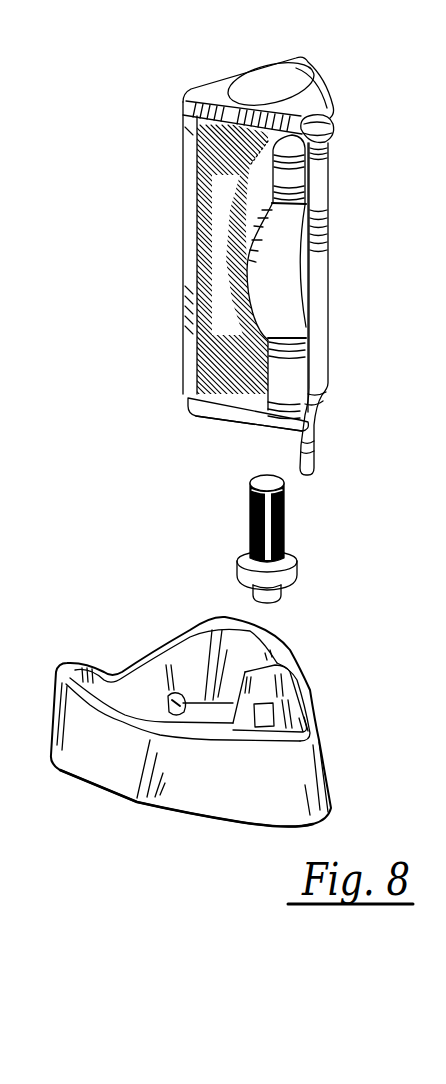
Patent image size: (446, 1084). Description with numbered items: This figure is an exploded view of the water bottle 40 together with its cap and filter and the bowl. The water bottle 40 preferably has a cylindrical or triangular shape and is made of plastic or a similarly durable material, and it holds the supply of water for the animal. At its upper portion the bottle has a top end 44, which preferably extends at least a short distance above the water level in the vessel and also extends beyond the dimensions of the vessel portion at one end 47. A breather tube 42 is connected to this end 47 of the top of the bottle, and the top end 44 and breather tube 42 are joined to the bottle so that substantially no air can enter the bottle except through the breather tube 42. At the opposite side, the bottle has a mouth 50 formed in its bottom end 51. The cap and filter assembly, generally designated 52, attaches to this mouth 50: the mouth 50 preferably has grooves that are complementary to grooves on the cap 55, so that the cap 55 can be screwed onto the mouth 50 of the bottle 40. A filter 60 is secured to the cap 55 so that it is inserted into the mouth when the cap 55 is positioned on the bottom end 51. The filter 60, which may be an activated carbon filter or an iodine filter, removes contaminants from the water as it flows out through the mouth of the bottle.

The water bottle 40 is at (150, 238).
The breather tube 42 is at (330, 285).
The top end 44 is at (262, 78).
The end 47 is at (334, 119).
The mouth 50 is at (187, 403).
The bottom end 51 is at (245, 431).
The cap and filter assembly 52 is at (242, 539).
The cap 55 is at (240, 575).
The filter 60 is at (285, 531).